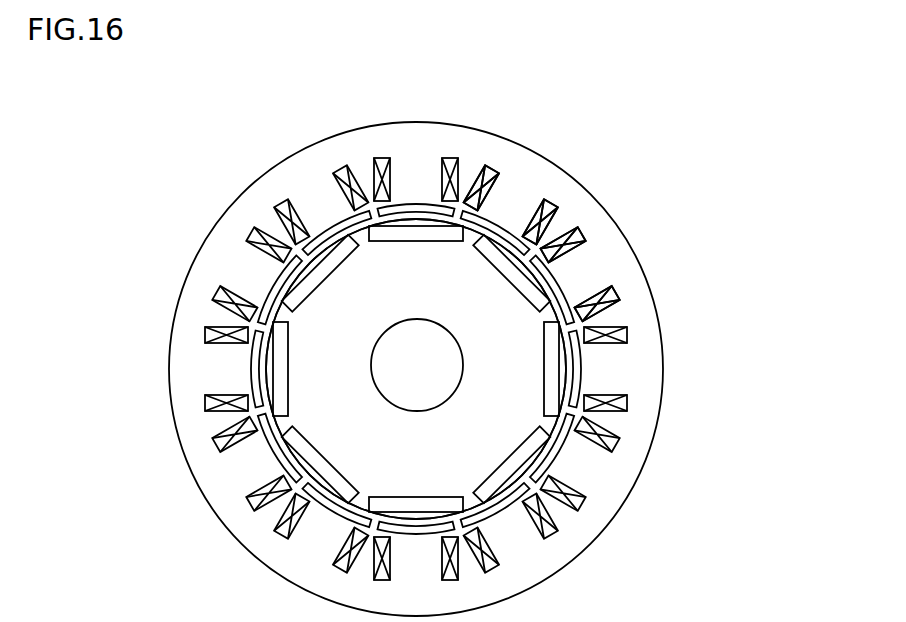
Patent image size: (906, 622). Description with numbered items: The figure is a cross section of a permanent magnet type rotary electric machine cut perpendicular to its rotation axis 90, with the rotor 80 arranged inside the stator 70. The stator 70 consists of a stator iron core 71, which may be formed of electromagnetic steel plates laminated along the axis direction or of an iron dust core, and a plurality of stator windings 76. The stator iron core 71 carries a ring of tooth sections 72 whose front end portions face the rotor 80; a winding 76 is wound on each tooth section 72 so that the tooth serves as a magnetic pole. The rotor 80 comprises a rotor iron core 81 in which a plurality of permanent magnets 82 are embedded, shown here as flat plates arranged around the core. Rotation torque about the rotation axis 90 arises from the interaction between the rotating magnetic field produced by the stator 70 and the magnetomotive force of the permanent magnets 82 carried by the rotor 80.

The stator 70 is at (645, 286).
The stator iron core 71 is at (537, 172).
The tooth section 72 is at (622, 391).
The stator winding 76 is at (555, 216).
The rotor 80 is at (303, 272).
The rotor iron core 81 is at (337, 413).
The permanent magnet 82 is at (278, 370).
The rotation axis 90 is at (428, 371).